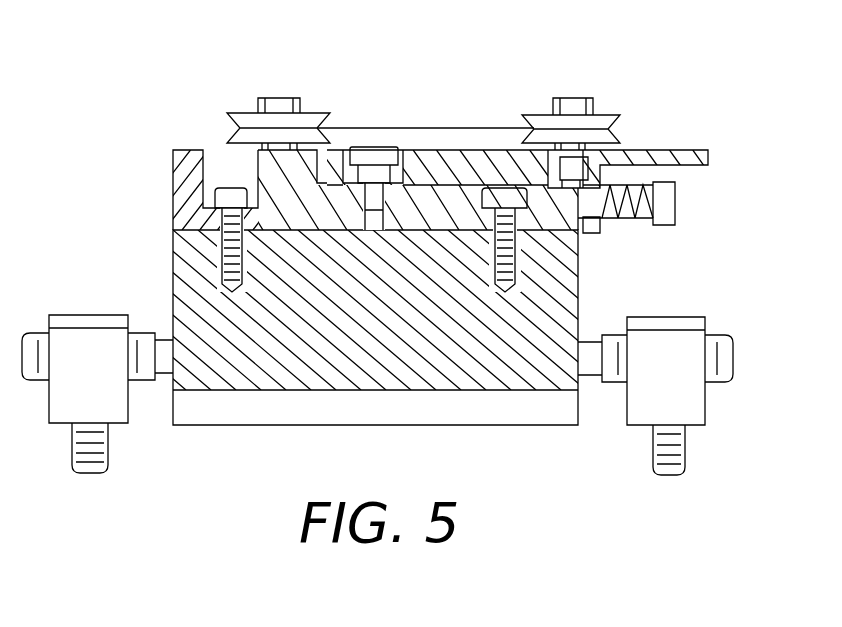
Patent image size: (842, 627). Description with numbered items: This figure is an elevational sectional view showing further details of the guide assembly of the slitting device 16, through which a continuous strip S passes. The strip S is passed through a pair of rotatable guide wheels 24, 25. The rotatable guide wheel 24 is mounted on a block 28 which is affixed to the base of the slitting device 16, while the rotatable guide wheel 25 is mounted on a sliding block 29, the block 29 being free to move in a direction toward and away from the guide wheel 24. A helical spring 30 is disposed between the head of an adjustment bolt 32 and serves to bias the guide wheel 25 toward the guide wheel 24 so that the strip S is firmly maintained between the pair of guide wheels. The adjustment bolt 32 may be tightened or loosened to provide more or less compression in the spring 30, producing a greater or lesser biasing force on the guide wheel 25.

The slitting device 16 is at (497, 372).
The rotatable guide wheel 24 is at (247, 113).
The rotatable guide wheel 25 is at (607, 113).
The block 28 is at (173, 177).
The sliding block 29 is at (463, 150).
The helical spring 30 is at (636, 218).
The adjustment bolt 32 is at (667, 225).
The strip S is at (393, 128).